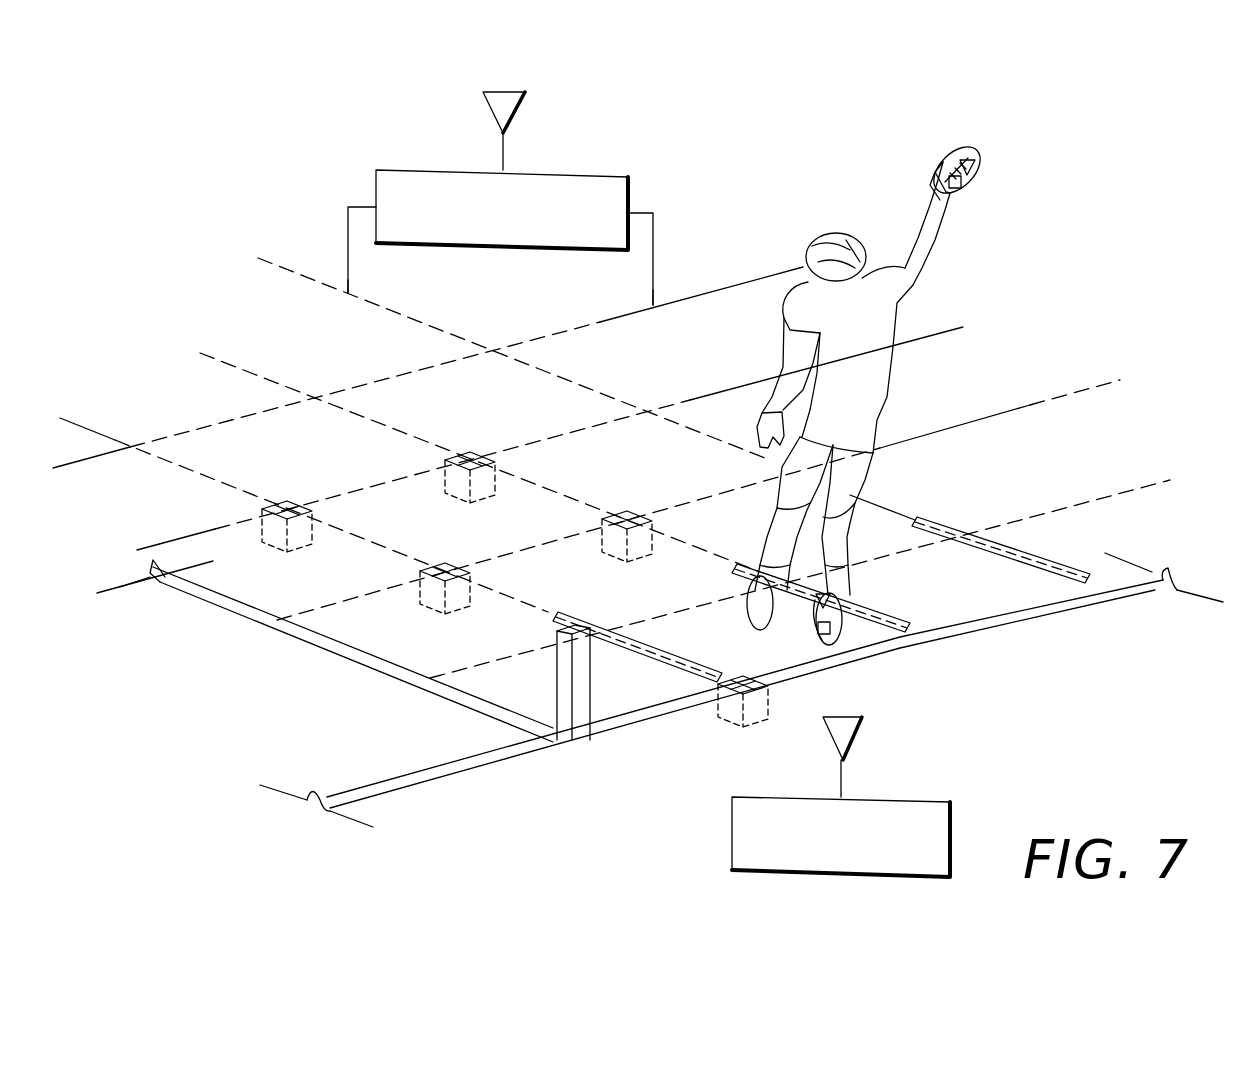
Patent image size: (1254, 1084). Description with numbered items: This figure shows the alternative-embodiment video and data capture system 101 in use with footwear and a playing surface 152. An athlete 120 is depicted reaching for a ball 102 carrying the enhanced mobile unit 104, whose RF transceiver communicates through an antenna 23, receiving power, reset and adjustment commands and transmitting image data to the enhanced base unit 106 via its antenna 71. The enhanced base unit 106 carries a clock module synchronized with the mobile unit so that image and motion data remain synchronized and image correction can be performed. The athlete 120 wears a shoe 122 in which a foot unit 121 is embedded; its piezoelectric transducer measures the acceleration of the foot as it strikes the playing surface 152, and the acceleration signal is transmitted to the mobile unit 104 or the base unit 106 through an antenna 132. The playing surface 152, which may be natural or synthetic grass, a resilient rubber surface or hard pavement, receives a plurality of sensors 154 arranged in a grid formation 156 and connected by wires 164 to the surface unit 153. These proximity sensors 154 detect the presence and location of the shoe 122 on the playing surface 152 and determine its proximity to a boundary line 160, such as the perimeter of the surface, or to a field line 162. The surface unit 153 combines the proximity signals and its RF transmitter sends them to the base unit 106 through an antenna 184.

The video and data capture system 101 is at (228, 200).
The football 102 is at (963, 147).
The antenna 23 is at (983, 156).
The enhanced mobile unit 104 is at (967, 195).
The enhanced base unit 106 is at (841, 837).
The antenna 71 is at (853, 727).
The athlete 120 is at (870, 377).
The foot unit 121 is at (857, 596).
The shoe 122 is at (832, 645).
The antenna 132 is at (817, 623).
The playing surface 152 is at (610, 322).
The surface unit 153 is at (502, 210).
The sensors 154 is at (462, 455).
The grid formation 156 is at (313, 400).
The boundary line 160 is at (1138, 587).
The field line 162 is at (953, 518).
The wires 164 is at (653, 250).
The antenna 184 is at (516, 115).